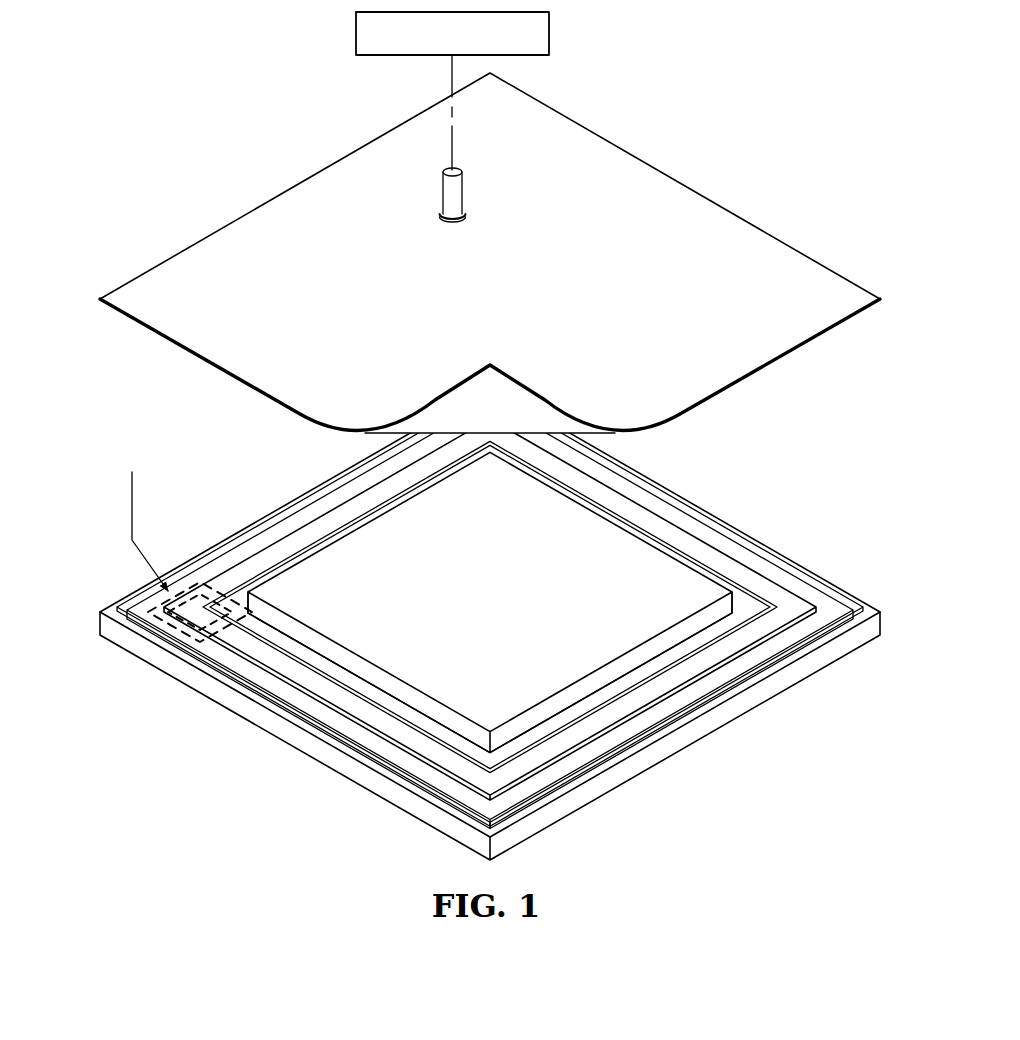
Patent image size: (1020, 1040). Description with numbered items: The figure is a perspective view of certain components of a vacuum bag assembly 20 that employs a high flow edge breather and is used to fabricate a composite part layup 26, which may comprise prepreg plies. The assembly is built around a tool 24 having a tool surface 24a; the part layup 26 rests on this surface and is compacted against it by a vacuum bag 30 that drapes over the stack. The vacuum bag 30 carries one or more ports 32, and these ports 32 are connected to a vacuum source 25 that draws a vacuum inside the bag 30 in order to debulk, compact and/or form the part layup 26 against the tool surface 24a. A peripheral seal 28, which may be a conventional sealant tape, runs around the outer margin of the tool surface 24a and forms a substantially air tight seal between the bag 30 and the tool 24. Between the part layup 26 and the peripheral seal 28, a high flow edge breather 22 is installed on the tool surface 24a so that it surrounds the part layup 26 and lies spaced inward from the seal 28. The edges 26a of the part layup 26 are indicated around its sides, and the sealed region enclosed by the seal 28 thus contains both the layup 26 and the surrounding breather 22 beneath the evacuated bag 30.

The apparatus 20 is at (828, 232).
The high flow edge breather 22 is at (768, 590).
The tool 24 is at (108, 634).
The tool surface 24a is at (110, 609).
The vacuum source 25 is at (356, 34).
The composite part layup 26 is at (474, 605).
The substrate edges 26a is at (267, 572).
The peripheral seal 28 is at (838, 600).
The vacuum bag 30 is at (156, 282).
The ports 32 is at (443, 194).